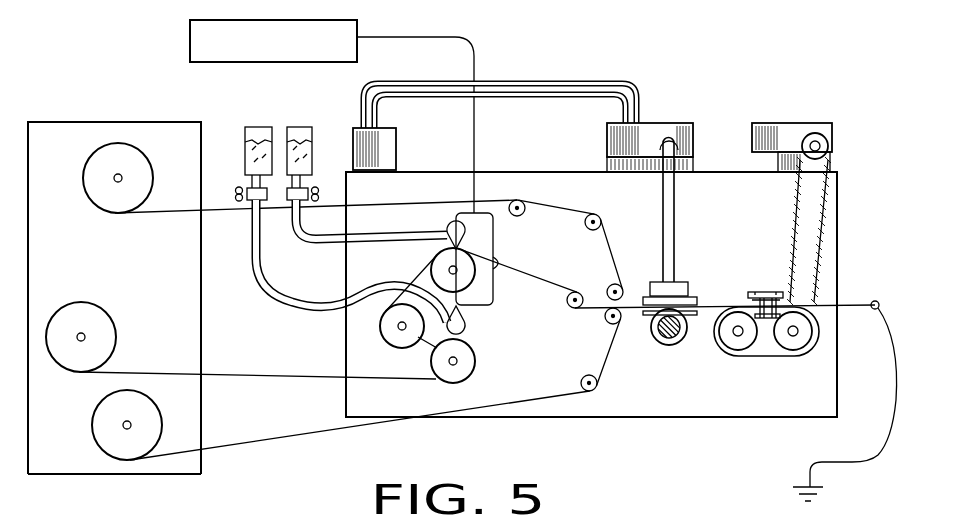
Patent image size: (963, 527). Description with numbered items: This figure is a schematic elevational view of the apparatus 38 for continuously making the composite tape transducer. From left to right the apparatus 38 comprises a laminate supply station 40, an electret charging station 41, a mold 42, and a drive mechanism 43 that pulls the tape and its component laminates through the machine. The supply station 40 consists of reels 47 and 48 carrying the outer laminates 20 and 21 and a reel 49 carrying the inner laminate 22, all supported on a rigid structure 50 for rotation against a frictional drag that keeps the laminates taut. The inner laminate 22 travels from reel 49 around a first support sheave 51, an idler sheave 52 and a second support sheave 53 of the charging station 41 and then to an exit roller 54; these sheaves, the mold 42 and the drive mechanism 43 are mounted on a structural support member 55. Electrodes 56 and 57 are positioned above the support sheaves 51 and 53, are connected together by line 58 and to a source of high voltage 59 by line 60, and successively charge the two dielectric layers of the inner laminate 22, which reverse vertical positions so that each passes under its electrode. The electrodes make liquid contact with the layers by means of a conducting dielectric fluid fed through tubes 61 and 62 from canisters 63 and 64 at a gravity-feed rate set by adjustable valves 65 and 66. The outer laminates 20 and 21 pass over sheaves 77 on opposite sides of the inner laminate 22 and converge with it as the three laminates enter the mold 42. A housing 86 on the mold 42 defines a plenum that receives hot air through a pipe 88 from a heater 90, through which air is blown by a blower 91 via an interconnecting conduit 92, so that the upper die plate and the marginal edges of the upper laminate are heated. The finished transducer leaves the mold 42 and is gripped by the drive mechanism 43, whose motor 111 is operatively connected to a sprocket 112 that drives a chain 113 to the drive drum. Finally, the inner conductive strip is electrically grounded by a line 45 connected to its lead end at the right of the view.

The outer laminate 20 is at (180, 208).
The outer laminate 21 is at (293, 440).
The inner laminate 22 is at (150, 375).
The apparatus 38 is at (700, 112).
The laminate supply station 40 is at (104, 92).
The electret charging station 41 is at (486, 340).
The mold 42 is at (667, 348).
The drive mechanism 43 is at (753, 361).
The line 45 is at (865, 463).
The reel 47 is at (88, 160).
The reel 48 is at (125, 443).
The reel 49 is at (70, 375).
The rigid structure 50 is at (188, 477).
The first support sheave 51 is at (460, 368).
The idler sheave 52 is at (392, 326).
The second support sheave 53 is at (440, 272).
The exit roller 54 is at (569, 308).
The structural support member 55 is at (610, 418).
The electrode 56 is at (466, 322).
The electrode 57 is at (447, 232).
The line 58 is at (496, 248).
The source of high voltage 59 is at (190, 34).
The line 60 is at (474, 45).
The tube 61 is at (318, 243).
The tube 62 is at (266, 295).
The canister 63 is at (300, 127).
The canister 64 is at (258, 127).
The adjustable valve 65 is at (316, 187).
The adjustable valve 66 is at (238, 187).
The sheaves 77 is at (590, 230).
The housing 86 is at (678, 284).
The pipe 88 is at (675, 209).
The heater 90 is at (660, 123).
The blower 91 is at (398, 141).
The interconnecting conduit 92 is at (540, 82).
The motor 111 is at (781, 123).
The sprocket 112 is at (828, 132).
The chain 113 is at (822, 218).